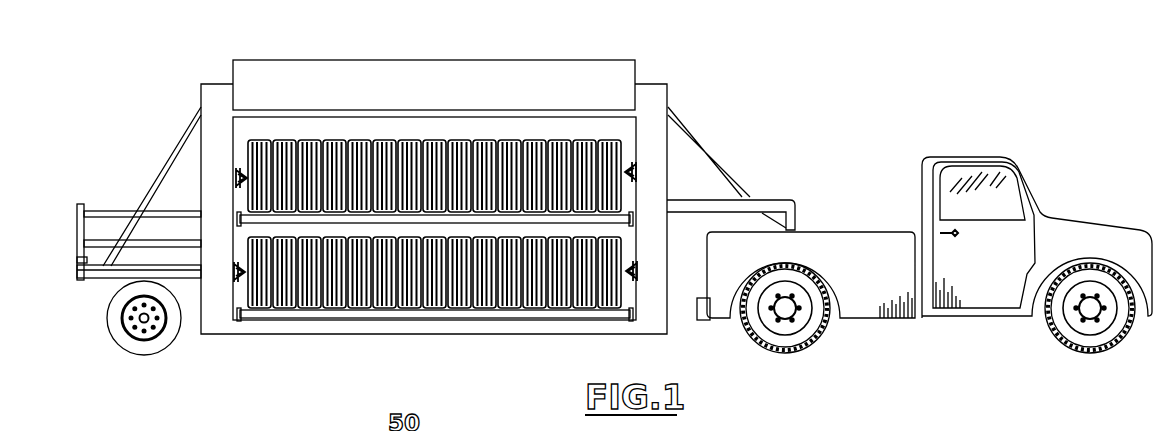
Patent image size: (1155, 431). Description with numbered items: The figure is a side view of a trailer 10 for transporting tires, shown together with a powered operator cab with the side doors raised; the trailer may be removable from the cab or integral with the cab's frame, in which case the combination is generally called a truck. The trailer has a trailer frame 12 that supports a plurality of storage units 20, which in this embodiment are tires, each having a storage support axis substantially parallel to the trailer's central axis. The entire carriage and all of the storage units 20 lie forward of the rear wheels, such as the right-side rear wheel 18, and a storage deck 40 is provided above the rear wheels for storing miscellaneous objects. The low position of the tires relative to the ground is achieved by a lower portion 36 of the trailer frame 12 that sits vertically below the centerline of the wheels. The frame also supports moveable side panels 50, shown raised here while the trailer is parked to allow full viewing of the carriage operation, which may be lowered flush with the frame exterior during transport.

The trailer 10 is at (454, 195).
The trailer frame 12 is at (214, 98).
The right-side rear wheel 18 is at (157, 356).
The storage units 20 is at (240, 192).
The lower portion of the trailer frame 36 is at (271, 333).
The storage deck 40 is at (87, 264).
The moveable side panels 50 is at (263, 78).